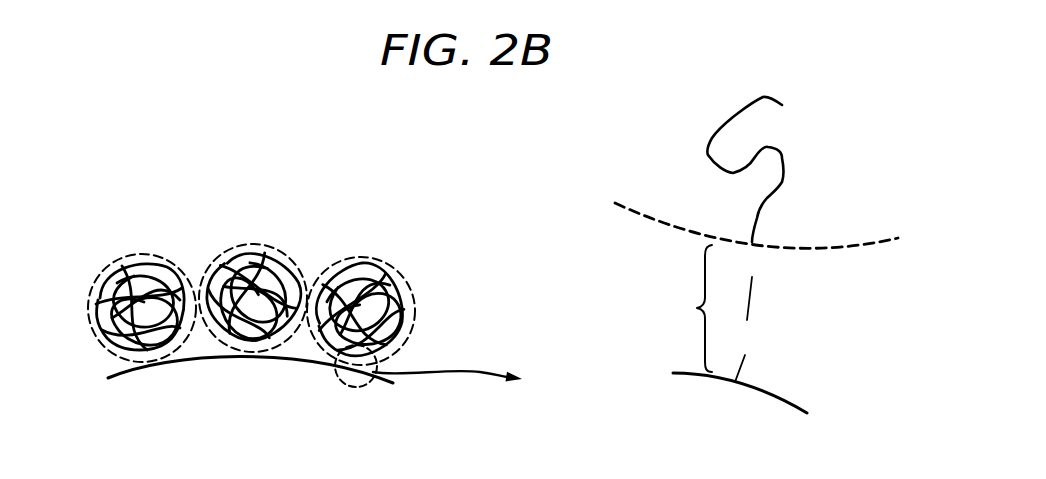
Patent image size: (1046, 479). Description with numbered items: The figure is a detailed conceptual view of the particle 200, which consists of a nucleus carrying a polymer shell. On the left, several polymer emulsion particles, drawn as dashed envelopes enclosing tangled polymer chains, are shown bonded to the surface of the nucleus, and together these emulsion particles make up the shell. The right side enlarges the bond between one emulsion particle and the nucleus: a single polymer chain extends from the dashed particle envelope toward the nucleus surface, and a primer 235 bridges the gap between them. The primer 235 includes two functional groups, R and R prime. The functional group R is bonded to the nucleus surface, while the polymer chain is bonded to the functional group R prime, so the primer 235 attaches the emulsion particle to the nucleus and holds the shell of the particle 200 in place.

The particle 200 is at (138, 150).
The primer 235 is at (704, 313).